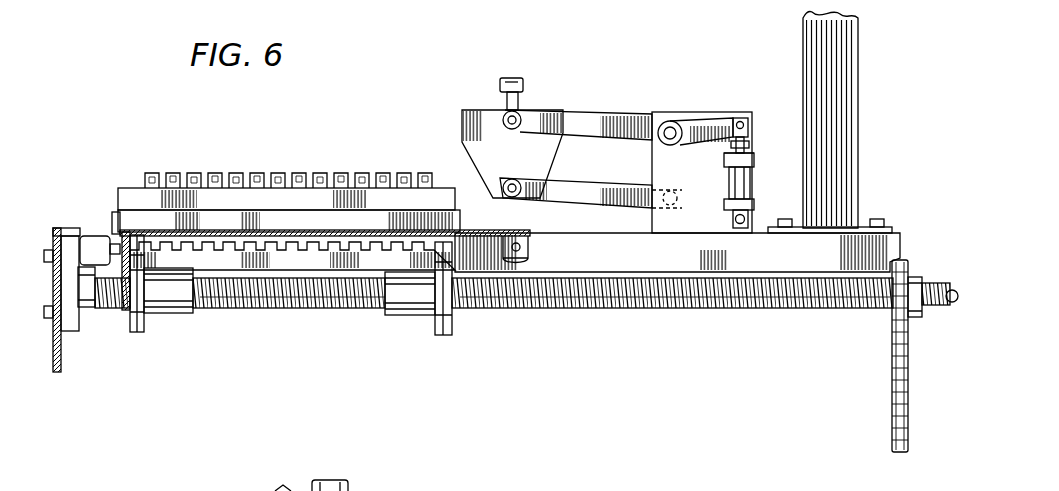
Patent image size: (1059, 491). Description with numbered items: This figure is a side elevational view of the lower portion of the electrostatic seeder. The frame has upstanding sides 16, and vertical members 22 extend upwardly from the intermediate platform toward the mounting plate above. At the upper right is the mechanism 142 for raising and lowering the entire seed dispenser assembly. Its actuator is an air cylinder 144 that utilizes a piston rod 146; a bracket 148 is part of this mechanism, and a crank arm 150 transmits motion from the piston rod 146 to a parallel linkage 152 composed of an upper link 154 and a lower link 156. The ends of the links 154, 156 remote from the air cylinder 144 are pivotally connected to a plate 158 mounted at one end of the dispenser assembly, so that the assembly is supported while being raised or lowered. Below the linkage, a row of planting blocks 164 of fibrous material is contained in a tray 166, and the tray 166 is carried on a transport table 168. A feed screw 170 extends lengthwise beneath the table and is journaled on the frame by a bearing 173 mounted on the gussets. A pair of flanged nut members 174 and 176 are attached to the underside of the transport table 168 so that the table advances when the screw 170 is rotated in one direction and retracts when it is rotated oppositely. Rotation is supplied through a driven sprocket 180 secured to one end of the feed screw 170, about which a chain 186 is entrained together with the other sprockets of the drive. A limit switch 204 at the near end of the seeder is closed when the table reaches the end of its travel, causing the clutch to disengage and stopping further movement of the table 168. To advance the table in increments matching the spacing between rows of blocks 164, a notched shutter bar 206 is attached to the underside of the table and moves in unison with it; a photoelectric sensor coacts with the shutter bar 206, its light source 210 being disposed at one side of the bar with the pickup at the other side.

The upstanding sides 16 is at (60, 368).
The vertical members 22 is at (860, 150).
The mechanism 142 is at (766, 146).
The air cylinder 144 is at (755, 180).
The piston rod 146 is at (760, 135).
The bracket 148 is at (672, 112).
The crank arm 150 is at (690, 113).
The parallel linkage 152 is at (600, 106).
The upper link 154 is at (590, 128).
The lower link 156 is at (608, 203).
The plate 158 is at (462, 118).
The planting blocks 164 is at (210, 172).
The tray 166 is at (133, 194).
The transport table 168 is at (118, 212).
The feed screw 170 is at (682, 308).
The bearing 173 is at (70, 288).
The flanged nut member 174 is at (172, 312).
The flanged nut member 176 is at (410, 318).
The driven sprocket 180 is at (915, 278).
The chain 186 is at (892, 405).
The limit switch 204 is at (85, 240).
The notched shutter bar 206 is at (204, 245).
The light source 210 is at (510, 251).